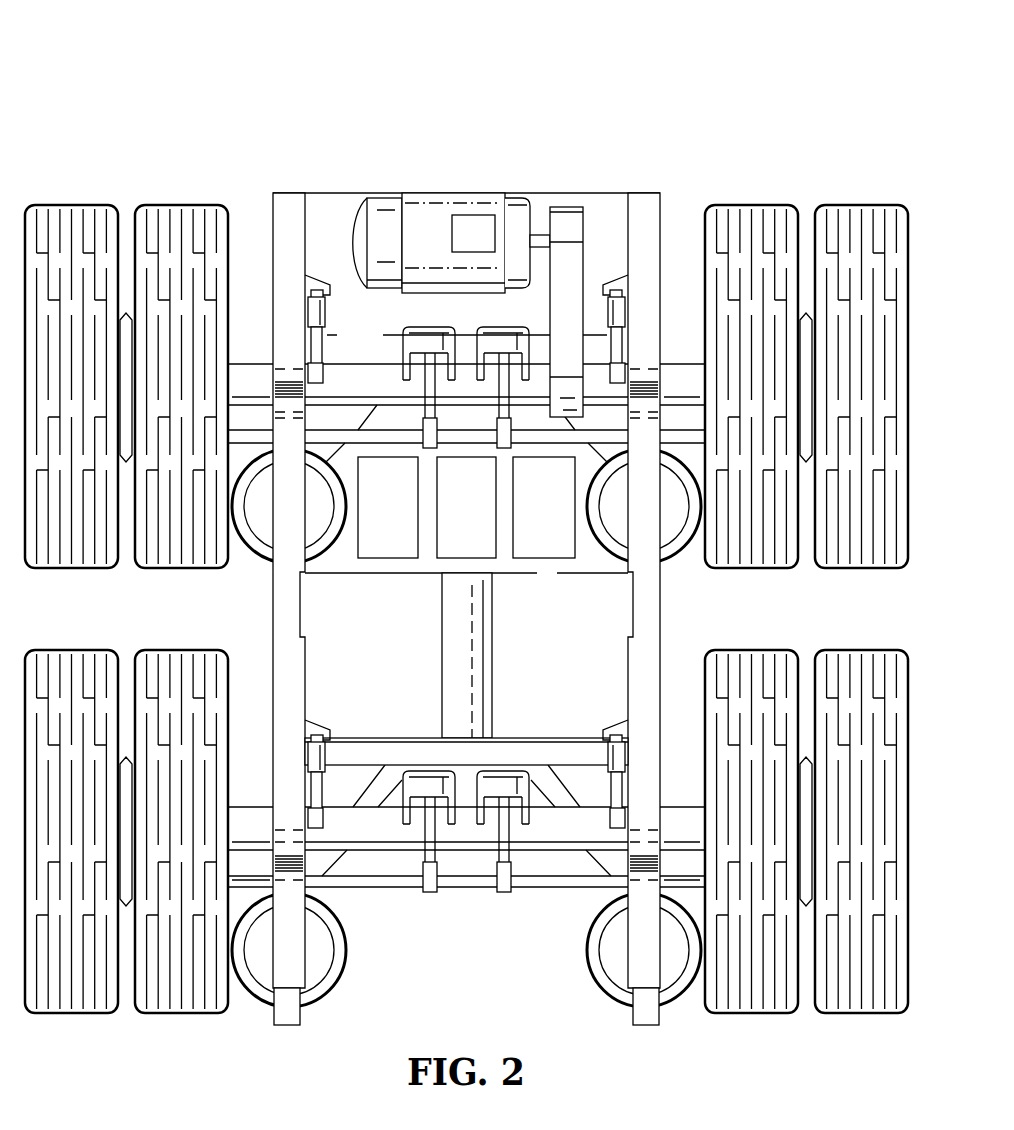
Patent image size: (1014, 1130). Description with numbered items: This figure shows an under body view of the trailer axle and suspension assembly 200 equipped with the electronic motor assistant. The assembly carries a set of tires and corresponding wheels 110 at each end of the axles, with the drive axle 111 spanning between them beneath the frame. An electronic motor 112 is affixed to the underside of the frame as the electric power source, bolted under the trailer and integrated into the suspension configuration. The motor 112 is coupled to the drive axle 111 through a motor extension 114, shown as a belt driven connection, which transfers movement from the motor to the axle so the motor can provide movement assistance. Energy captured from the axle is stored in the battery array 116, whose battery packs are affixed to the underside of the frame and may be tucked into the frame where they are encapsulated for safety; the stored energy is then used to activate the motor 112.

The vehicle chassis 200 is at (466, 521).
The set of tires and corresponding wheels 110 is at (869, 192).
The drive axle 111 is at (373, 375).
The electronic motor 112 is at (450, 187).
The motor extension 114 is at (569, 199).
The battery array 116 is at (549, 570).